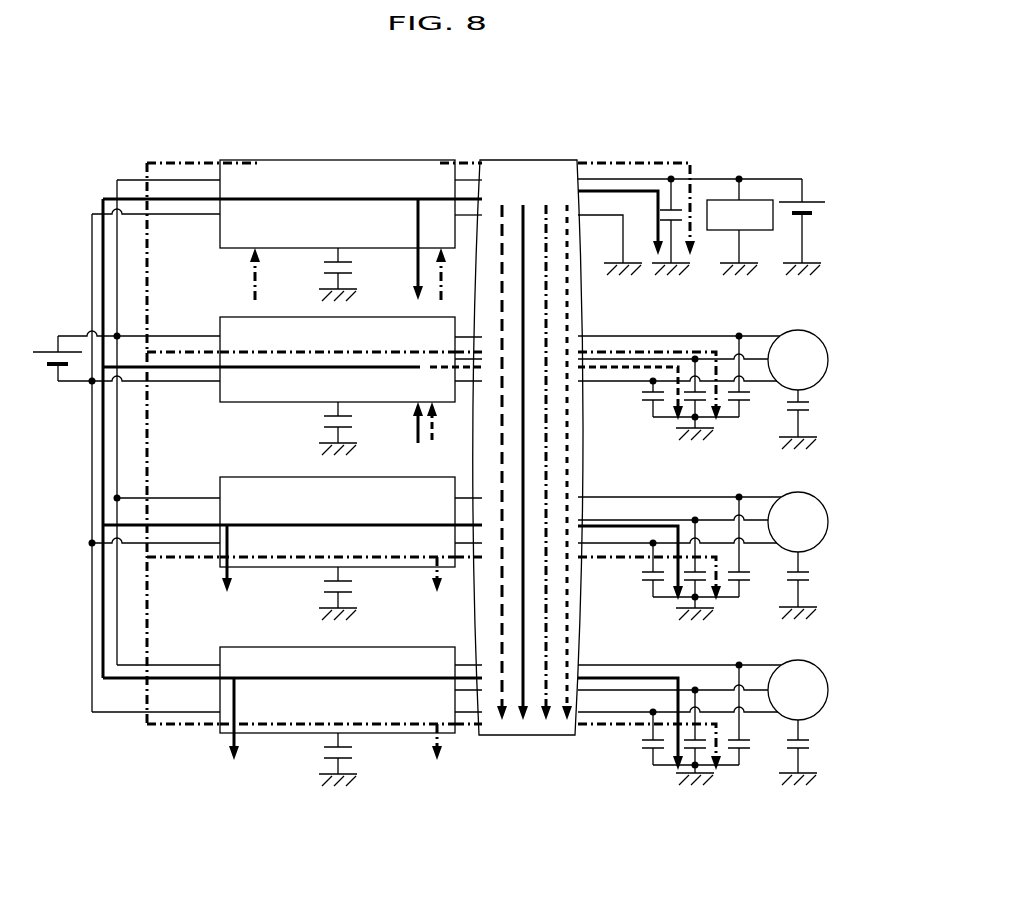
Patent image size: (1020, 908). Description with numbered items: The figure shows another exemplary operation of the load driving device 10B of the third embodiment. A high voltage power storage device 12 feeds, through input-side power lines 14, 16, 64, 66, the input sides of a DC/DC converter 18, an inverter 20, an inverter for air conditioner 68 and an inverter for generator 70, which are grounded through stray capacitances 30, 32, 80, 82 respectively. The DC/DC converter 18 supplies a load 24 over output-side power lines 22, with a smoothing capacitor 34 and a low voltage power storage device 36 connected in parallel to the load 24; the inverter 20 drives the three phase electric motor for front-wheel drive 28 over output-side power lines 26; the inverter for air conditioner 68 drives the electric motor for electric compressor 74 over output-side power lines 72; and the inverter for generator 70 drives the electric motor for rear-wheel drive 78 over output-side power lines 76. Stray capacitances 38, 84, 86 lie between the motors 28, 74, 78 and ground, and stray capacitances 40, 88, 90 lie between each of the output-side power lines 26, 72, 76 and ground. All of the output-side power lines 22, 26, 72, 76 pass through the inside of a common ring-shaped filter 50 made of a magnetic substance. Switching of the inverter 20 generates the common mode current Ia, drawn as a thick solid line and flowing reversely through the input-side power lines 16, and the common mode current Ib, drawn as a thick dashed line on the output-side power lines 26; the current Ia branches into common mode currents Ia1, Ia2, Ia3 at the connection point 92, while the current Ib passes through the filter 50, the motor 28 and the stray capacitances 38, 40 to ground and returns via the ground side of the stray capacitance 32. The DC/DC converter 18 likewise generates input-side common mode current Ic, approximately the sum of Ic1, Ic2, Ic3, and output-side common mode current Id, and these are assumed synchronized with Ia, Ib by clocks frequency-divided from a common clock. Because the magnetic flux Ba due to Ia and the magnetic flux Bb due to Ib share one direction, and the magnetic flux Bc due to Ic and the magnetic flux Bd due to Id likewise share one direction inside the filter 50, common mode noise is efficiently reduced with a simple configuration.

The load driving device 10B is at (532, 88).
The high voltage power storage device 12 is at (41, 357).
The input-side power lines 14 is at (190, 222).
The input-side power lines 16 is at (188, 388).
The DC/DC converter 18 is at (356, 160).
The inverter 20 is at (355, 317).
The output-side power lines 22 is at (603, 225).
The load 24 is at (765, 232).
The output-side power lines 26 is at (603, 388).
The three phase electric motor for front-wheel drive 28 is at (800, 331).
The stray capacitance 30 is at (323, 268).
The stray capacitance 32 is at (323, 421).
The smoothing capacitor 34 is at (668, 216).
The low voltage power storage device 36 is at (815, 210).
The stray capacitance 38 is at (810, 405).
The stray capacitances 40 is at (648, 398).
The ring-shaped filter 50 is at (526, 161).
The input-side power lines 64 is at (187, 566).
The input-side power lines 66 is at (190, 735).
The inverter for air conditioner 68 is at (357, 478).
The inverter for generator 70 is at (354, 648).
The output-side power lines 72 is at (603, 565).
The electric motor for electric compressor 74 is at (800, 494).
The output-side power lines 76 is at (603, 732).
The electric motor for rear-wheel drive 78 is at (800, 662).
The stray capacitance 80 is at (323, 582).
The stray capacitance 82 is at (320, 753).
The stray capacitance 84 is at (808, 578).
The stray capacitance 86 is at (808, 748).
The stray capacitances 88 is at (646, 578).
The stray capacitances 90 is at (646, 745).
The connection point 92 is at (113, 333).
The common mode current Ia is at (163, 370).
The common mode current Ia1 is at (168, 204).
The common mode current Ia2 is at (165, 497).
The common mode current Ia3 is at (166, 680).
The common mode current Ib is at (433, 427).
The common mode current Ic is at (172, 163).
The common mode current Ic1 is at (165, 351).
The common mode current Ic2 is at (173, 560).
The common mode current Ic3 is at (173, 730).
The common mode current Id is at (468, 161).
The magnetic flux Ba is at (510, 722).
The magnetic flux Bb is at (495, 725).
The magnetic flux Bc is at (546, 725).
The magnetic flux Bd is at (567, 725).